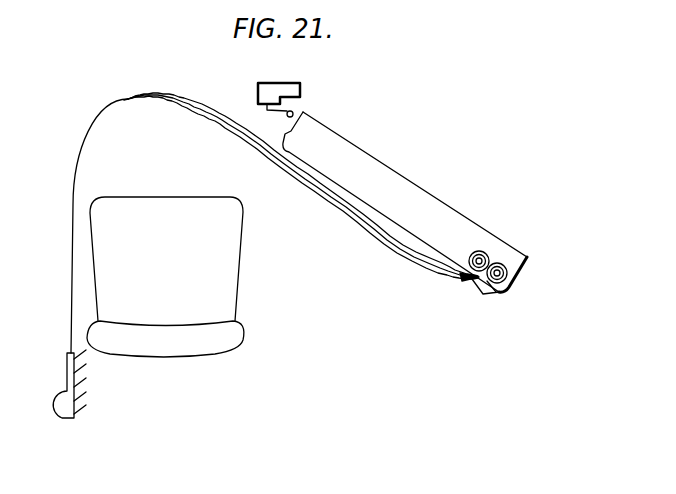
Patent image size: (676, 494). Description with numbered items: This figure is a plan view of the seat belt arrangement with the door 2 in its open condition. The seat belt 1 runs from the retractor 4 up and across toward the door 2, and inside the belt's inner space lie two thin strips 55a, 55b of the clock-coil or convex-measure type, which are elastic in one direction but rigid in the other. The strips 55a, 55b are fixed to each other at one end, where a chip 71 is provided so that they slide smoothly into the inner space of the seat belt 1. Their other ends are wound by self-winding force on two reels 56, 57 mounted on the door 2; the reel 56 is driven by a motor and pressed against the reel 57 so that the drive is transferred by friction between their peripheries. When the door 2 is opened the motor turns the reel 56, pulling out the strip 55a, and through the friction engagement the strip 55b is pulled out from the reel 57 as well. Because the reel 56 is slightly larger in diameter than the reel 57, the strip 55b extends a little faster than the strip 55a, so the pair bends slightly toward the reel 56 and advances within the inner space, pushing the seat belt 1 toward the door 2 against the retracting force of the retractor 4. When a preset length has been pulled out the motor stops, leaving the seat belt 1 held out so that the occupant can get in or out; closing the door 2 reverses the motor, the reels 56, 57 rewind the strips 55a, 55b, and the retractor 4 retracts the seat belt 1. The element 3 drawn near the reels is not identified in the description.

The seat belt 1 is at (88, 128).
The chip 71 is at (126, 102).
The thin strip 55a is at (303, 187).
The thin strip 55b is at (172, 104).
The door 2 is at (373, 158).
The reel 56 is at (487, 251).
The reel 57 is at (506, 265).
The guide plate 3 is at (483, 296).
The retractor 4 is at (73, 408).